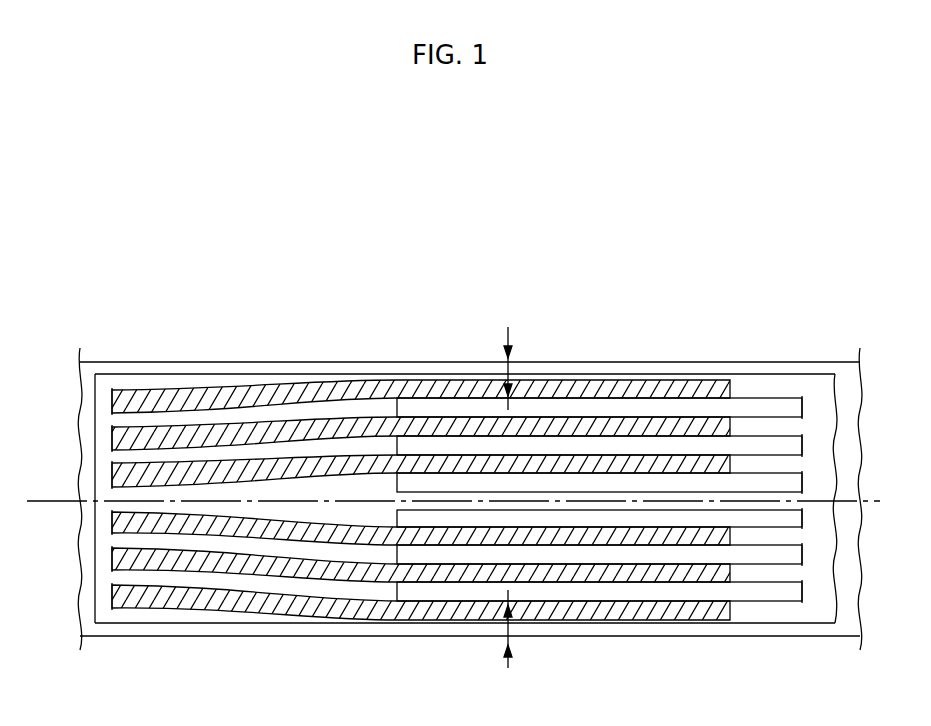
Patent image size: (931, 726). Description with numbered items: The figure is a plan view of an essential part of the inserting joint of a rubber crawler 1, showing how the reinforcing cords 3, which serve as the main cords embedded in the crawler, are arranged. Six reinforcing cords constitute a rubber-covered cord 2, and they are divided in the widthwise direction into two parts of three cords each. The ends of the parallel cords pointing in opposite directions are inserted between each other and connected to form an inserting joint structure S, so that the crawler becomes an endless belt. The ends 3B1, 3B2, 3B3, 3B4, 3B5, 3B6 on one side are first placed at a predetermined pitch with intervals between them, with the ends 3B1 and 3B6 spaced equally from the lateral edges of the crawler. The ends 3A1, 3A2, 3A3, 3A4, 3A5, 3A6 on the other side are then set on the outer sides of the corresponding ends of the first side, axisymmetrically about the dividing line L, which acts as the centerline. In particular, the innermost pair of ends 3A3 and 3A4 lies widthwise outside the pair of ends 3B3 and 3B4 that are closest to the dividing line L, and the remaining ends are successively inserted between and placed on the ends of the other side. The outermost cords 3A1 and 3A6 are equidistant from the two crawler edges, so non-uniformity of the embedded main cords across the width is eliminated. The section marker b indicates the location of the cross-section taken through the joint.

The rubber crawler 1 is at (267, 368).
The cord 2 is at (186, 374).
The reinforcing cords 3 is at (463, 501).
The end part of reinforcing cord on one side 3A1 is at (598, 386).
The end part of reinforcing cord on one side 3A2 is at (637, 424).
The end part of reinforcing cord on one side 3A3 is at (692, 466).
The end part of reinforcing cord on one side 3A4 is at (675, 537).
The end part of reinforcing cord on one side 3A5 is at (623, 573).
The end part of reinforcing cord on one side 3A6 is at (583, 610).
The end part of reinforcing cord on the other side 3B1 is at (553, 407).
The end part of reinforcing cord on the other side 3B2 is at (482, 443).
The end part of reinforcing cord on the other side 3B3 is at (443, 483).
The end part of reinforcing cord on the other side 3B4 is at (440, 517).
The end part of reinforcing cord on the other side 3B5 is at (447, 552).
The end part of reinforcing cord on the other side 3B6 is at (478, 592).
The dividing line L is at (50, 500).
The inserting joint structure S is at (407, 305).
The section line b- b is at (515, 500).